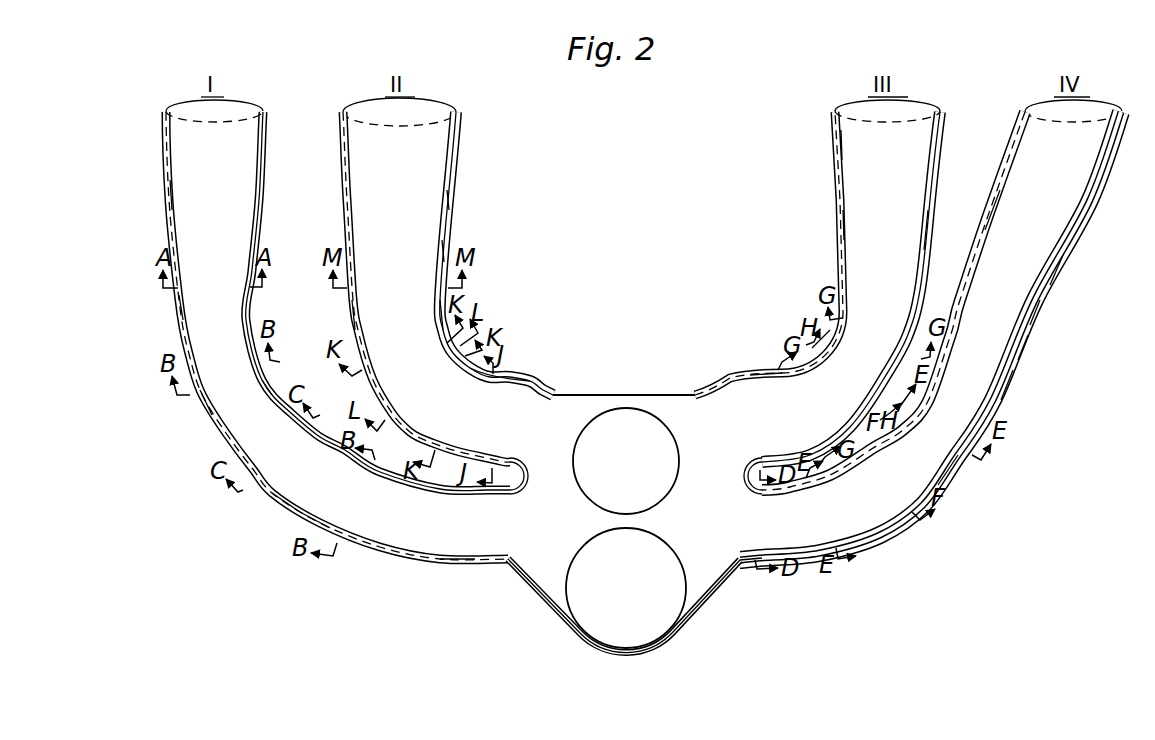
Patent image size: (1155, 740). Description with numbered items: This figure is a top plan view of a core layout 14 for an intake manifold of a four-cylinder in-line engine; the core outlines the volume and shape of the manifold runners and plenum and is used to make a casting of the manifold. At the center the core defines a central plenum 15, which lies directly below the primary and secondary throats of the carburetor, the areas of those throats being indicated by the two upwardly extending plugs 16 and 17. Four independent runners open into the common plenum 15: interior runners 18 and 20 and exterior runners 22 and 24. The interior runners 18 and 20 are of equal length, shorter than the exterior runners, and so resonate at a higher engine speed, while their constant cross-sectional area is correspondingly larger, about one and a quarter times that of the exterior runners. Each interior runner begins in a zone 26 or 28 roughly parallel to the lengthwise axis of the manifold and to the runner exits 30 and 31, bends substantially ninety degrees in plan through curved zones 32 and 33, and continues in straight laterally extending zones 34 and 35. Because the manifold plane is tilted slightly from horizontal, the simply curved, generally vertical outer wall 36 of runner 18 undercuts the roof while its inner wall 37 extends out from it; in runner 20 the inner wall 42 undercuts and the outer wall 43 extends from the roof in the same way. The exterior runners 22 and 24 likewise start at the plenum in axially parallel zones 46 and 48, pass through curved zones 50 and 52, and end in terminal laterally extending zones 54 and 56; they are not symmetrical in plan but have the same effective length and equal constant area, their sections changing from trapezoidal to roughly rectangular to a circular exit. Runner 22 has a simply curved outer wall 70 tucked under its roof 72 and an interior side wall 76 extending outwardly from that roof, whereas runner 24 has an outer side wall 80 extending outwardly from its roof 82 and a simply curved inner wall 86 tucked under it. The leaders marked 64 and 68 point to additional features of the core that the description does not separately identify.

The core layout 14 is at (574, 390).
The central plenum 15 is at (528, 545).
The plug 16 is at (633, 422).
The plug 17 is at (655, 623).
The interior runner 18 is at (428, 212).
The interior runner 20 is at (866, 182).
The exterior runner 22 is at (236, 178).
The exterior runner 24 is at (1052, 224).
The zone 26 is at (507, 373).
The zone 28 is at (766, 372).
The runner exit 30 is at (252, 101).
The runner exit 31 is at (925, 100).
The curved zone 32 is at (425, 355).
The curved zone 33 is at (812, 348).
The laterally extending zone 34 is at (442, 148).
The laterally extending zone 35 is at (860, 142).
The outer wall 36 is at (350, 312).
The inner wall 37 is at (445, 251).
The inner wall 42 is at (837, 218).
The outer wall 43 is at (938, 217).
The zone 46 is at (463, 547).
The zone 48 is at (733, 563).
The curved zone 50 is at (285, 480).
The curved zone 52 is at (940, 460).
The terminal laterally extending zone 54 is at (188, 190).
The terminal laterally extending zone 56 is at (1048, 263).
The web portion 64 is at (285, 515).
The web portion 68 is at (1013, 378).
The outer wall 70 is at (205, 418).
The roof 72 is at (200, 303).
The interior side wall 76 is at (270, 368).
The outer side wall 80 is at (1033, 340).
The roof 82 is at (1032, 303).
The inner wall 86 is at (985, 226).